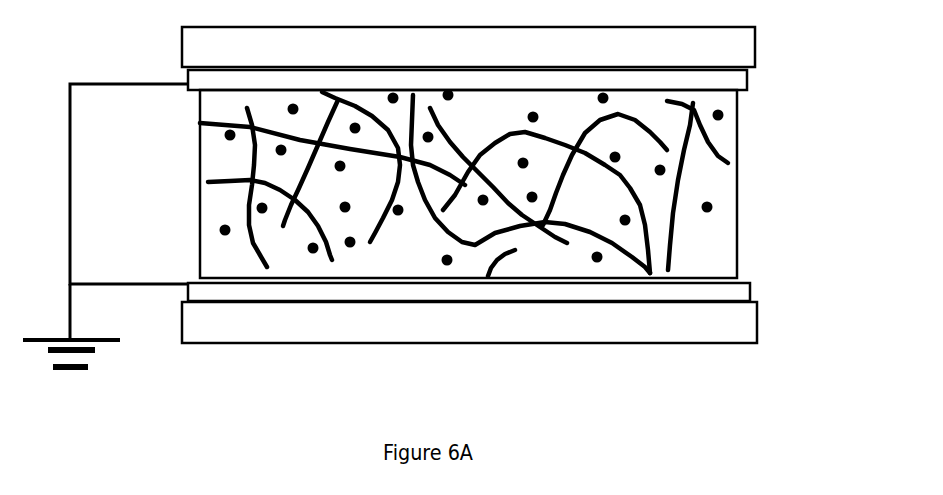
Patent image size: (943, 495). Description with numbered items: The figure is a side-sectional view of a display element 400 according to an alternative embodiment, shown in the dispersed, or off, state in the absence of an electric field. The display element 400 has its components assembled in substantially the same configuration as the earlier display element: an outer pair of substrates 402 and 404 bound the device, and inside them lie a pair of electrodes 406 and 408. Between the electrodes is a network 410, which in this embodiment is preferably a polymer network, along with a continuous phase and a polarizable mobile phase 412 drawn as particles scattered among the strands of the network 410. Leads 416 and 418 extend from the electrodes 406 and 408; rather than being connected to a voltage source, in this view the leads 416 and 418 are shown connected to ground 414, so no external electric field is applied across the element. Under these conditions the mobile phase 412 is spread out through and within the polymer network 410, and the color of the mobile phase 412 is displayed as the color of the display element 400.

The display element 400 is at (445, 355).
The substrate 402 is at (757, 45).
The substrate 404 is at (758, 333).
The electrode 406 is at (748, 80).
The electrode 408 is at (751, 291).
The network 410 is at (683, 185).
The mobile phase 412 is at (713, 208).
The ground 414 is at (94, 355).
The lead 416 is at (118, 81).
The lead 418 is at (134, 283).